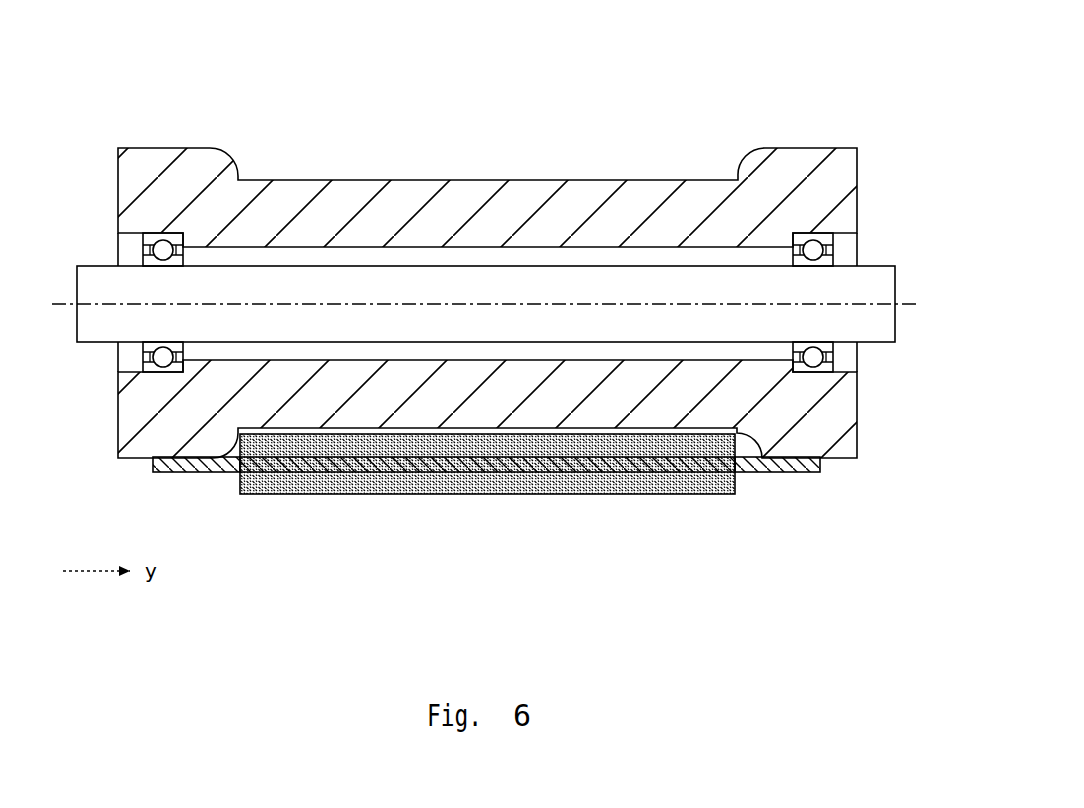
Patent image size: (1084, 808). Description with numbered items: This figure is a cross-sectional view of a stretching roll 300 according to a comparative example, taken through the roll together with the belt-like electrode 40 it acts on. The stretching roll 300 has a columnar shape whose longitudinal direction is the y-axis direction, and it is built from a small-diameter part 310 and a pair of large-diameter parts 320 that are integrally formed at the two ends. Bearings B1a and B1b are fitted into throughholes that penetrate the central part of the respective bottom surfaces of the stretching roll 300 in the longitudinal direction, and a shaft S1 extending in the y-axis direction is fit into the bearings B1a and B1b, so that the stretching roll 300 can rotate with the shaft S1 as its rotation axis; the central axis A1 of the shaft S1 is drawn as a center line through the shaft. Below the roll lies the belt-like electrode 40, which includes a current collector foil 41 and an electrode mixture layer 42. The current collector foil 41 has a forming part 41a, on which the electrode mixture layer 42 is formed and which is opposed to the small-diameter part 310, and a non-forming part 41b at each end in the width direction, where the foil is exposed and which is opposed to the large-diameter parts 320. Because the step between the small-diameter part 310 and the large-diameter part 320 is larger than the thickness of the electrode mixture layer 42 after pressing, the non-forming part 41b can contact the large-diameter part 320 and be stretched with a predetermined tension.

The stretching roll 300 is at (893, 66).
The small-diameter part 310 is at (523, 186).
The large-diameter parts 320 is at (146, 156).
The shaft S1 is at (896, 322).
The central axis A1 is at (505, 304).
The bearing B1a is at (834, 260).
The bearing B1b is at (143, 262).
The belt-like electrode 40 is at (483, 500).
The current collector foil 41 is at (822, 545).
The forming part 41a is at (677, 495).
The non-forming part 41b is at (786, 474).
The electrode mixture layer 42 is at (575, 495).